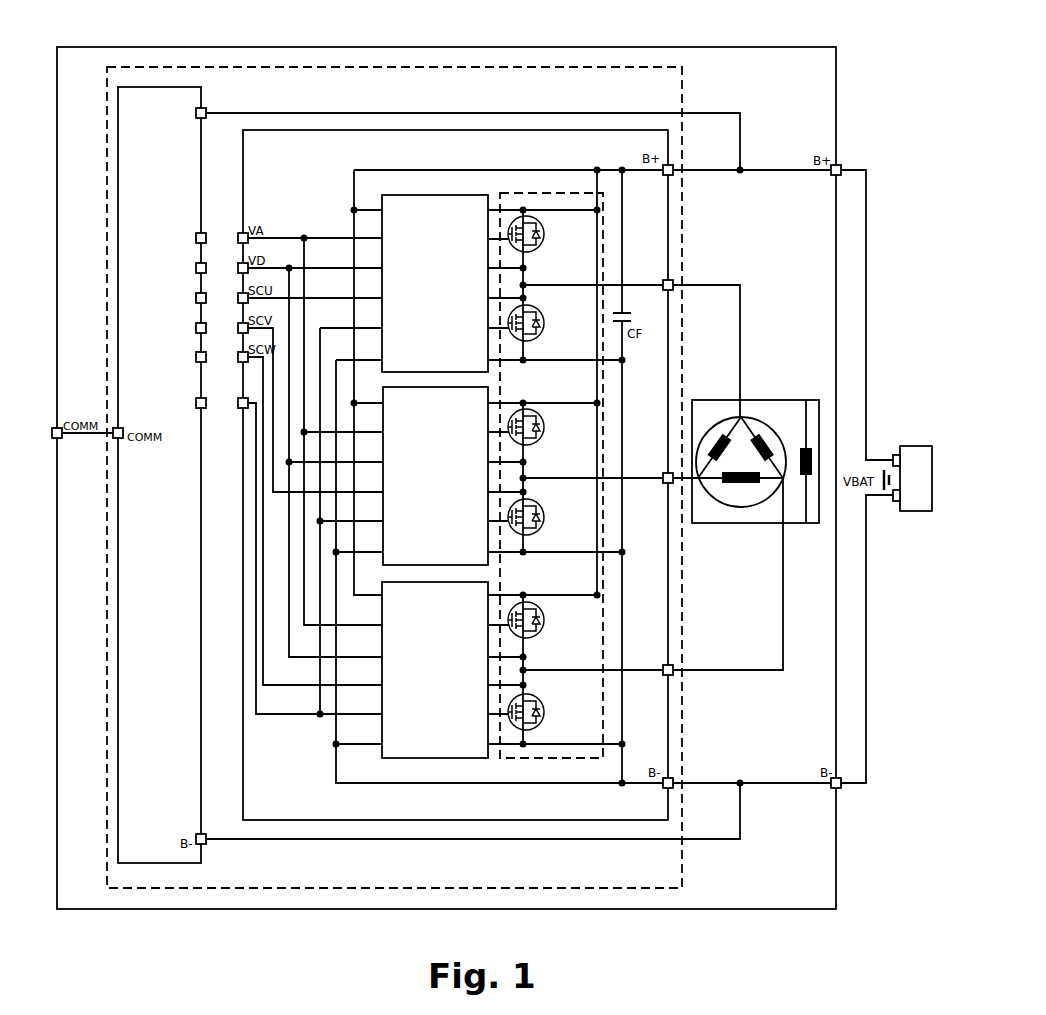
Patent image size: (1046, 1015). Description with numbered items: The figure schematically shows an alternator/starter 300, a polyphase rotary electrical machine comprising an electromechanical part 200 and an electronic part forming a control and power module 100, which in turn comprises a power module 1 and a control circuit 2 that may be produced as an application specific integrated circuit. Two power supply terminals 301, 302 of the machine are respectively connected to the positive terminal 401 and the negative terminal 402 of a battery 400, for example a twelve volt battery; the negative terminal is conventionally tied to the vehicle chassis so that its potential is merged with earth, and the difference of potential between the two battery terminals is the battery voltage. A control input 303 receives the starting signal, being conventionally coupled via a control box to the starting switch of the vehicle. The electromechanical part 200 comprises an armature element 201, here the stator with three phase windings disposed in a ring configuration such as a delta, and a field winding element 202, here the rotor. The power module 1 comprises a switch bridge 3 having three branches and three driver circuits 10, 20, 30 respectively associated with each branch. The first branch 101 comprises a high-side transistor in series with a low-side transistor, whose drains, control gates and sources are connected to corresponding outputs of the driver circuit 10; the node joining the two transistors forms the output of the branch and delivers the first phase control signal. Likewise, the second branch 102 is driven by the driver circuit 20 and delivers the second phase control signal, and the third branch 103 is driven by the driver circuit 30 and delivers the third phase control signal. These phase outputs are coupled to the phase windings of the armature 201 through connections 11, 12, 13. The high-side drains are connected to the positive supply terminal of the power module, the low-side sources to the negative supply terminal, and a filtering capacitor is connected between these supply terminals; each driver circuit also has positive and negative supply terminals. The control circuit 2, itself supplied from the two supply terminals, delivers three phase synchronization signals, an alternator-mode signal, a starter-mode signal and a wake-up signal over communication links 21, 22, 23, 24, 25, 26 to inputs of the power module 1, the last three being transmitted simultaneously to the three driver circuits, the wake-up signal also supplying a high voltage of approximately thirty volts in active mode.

The power module 1 is at (545, 130).
The control circuit 2 is at (168, 536).
The switch bridge 3 is at (572, 758).
The driver circuit 10 is at (450, 292).
The driver circuit 20 is at (450, 485).
The driver circuit 30 is at (452, 678).
The connection 11 is at (718, 285).
The connection 12 is at (669, 484).
The connection 13 is at (721, 675).
The communication link 21 is at (222, 299).
The communication link 22 is at (222, 329).
The communication link 23 is at (222, 359).
The communication link 24 is at (222, 267).
The communication link 25 is at (224, 237).
The communication link 26 is at (222, 405).
The control and power module 100 is at (402, 67).
The first branch 101 is at (585, 282).
The second branch 102 is at (587, 471).
The third branch 103 is at (588, 668).
The electromechanical part 200 is at (762, 400).
The armature element 201 is at (723, 506).
The field winding element 202 is at (796, 478).
The alternator/starter 300 is at (748, 47).
The power supply terminal 301 is at (840, 168).
The power supply terminal 302 is at (841, 786).
The control input 303 is at (62, 436).
The battery 400 is at (923, 446).
The positive terminal 401 is at (893, 455).
The negative terminal 402 is at (893, 504).